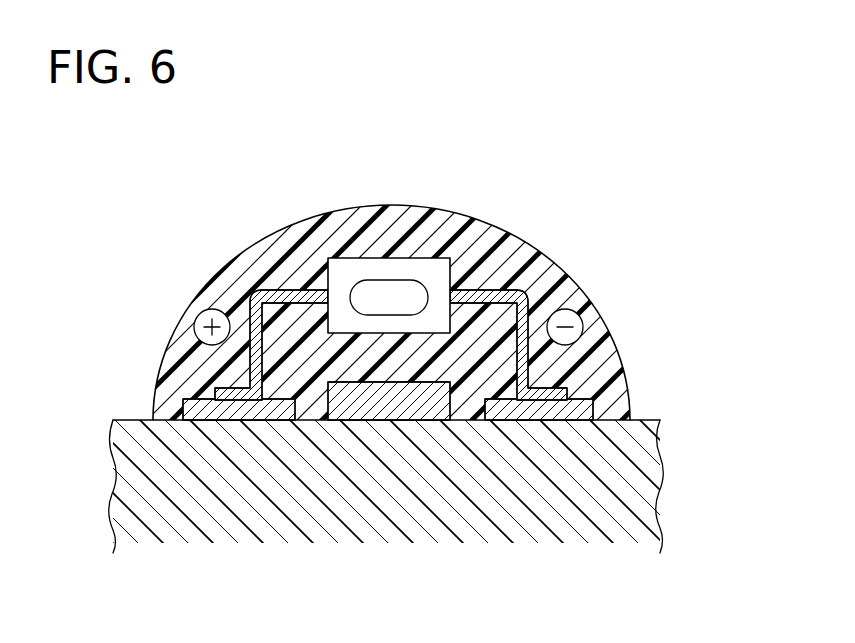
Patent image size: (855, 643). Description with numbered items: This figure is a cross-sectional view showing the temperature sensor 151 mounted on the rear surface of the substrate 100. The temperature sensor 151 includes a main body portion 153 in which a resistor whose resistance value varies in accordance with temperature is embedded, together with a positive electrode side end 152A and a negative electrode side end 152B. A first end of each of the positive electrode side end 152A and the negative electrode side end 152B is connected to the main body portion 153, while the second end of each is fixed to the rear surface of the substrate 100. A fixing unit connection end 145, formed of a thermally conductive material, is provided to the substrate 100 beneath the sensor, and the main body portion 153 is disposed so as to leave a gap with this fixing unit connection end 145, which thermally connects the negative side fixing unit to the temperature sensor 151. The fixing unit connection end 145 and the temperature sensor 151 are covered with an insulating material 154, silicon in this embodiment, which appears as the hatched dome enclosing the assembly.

The substrate 100 is at (632, 418).
The fixing unit connection end 145 is at (433, 382).
The temperature sensor 151 is at (421, 244).
The positive electrode side end 152A is at (237, 392).
The negative electrode side end 152B is at (555, 392).
The main body portion 153 is at (405, 258).
The insulating material 154 is at (300, 222).